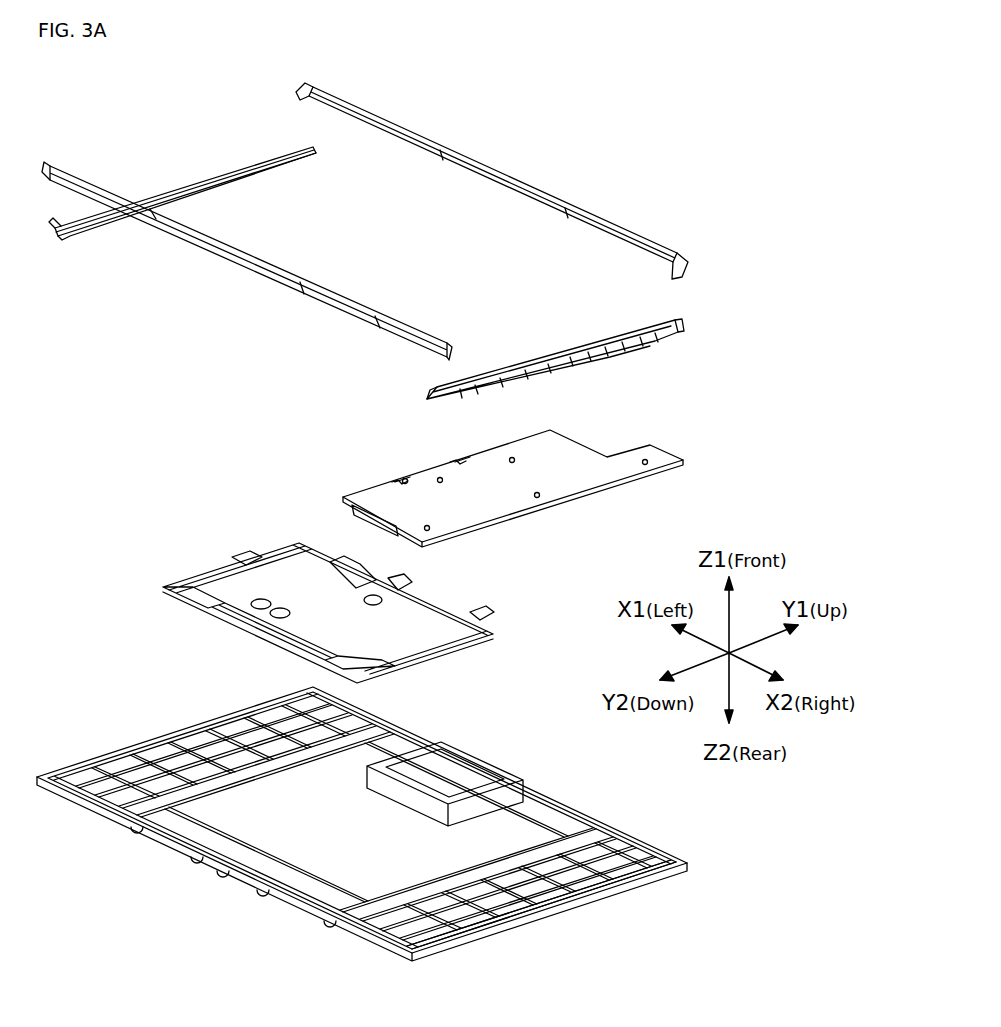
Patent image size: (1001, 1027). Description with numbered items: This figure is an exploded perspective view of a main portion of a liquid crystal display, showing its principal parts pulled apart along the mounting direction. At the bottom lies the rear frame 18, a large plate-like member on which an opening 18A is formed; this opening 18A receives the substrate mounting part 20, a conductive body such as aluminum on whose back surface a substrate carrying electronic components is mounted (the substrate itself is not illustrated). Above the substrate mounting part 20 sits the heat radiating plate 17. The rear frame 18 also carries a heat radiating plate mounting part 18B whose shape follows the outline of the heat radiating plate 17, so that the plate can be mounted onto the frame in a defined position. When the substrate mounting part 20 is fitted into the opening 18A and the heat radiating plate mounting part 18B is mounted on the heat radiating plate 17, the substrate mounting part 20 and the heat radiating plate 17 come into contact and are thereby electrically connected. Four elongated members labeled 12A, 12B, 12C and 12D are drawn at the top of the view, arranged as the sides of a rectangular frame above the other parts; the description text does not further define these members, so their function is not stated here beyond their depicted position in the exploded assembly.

The frame member (right side) 12A is at (642, 347).
The frame member (rear side) 12B is at (180, 187).
The frame member (left side) 12C is at (547, 193).
The frame member (front side) 12D is at (257, 273).
The heat radiating plate 17 is at (598, 475).
The rear frame 18 is at (405, 846).
The opening 18A is at (340, 833).
The heat radiating plate mounting part 18B is at (573, 907).
The substrate mounting part 20 is at (420, 627).